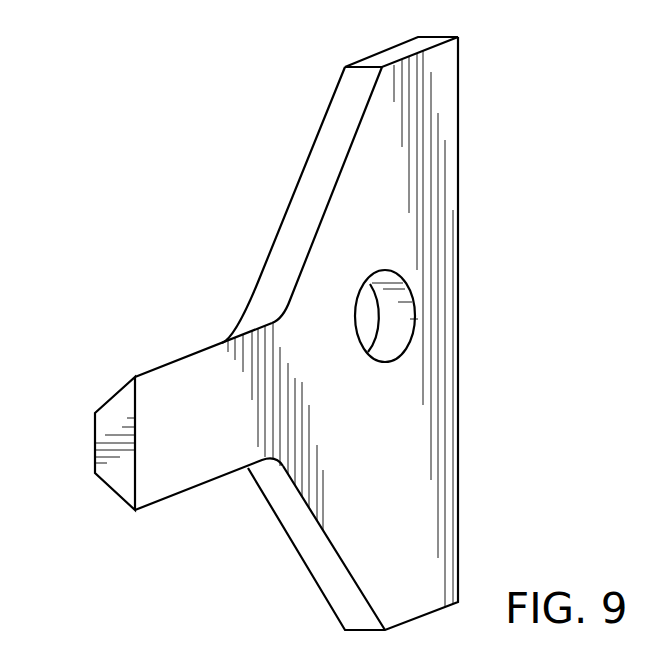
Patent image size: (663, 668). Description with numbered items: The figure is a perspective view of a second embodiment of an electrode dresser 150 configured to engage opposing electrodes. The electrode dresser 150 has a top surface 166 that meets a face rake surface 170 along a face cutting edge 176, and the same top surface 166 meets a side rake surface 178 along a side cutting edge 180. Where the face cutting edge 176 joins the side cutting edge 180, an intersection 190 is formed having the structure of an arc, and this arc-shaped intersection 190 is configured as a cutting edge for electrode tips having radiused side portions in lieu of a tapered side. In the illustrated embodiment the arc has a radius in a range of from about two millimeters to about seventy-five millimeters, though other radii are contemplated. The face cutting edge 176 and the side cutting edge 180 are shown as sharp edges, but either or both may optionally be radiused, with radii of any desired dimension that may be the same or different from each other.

The electrode dresser 150 is at (95, 92).
The top surface 166 is at (397, 454).
The face rake surface 170 is at (115, 397).
The face cutting edge 176 is at (172, 363).
The side rake surface 178 is at (332, 109).
The side cutting edge 180 is at (366, 108).
The intersection 190 is at (291, 301).